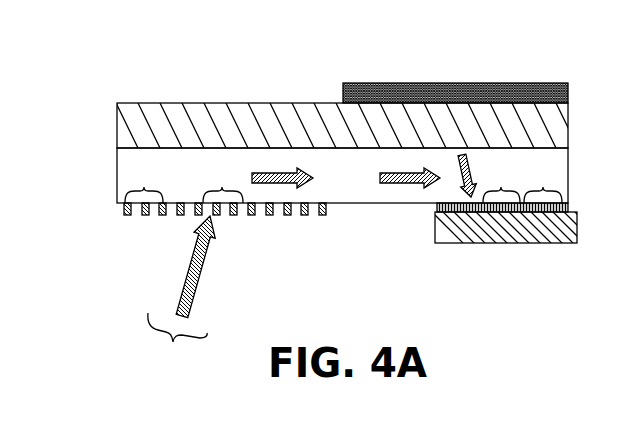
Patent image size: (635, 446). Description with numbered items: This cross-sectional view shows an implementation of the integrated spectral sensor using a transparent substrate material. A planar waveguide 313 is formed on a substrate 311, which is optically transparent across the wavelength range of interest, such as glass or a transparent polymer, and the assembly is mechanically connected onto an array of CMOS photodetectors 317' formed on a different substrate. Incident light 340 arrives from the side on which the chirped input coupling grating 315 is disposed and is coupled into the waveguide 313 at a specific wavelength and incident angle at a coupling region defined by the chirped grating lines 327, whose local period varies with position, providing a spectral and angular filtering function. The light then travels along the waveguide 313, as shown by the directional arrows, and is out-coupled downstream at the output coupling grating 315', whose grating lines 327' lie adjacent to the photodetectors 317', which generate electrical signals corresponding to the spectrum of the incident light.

The substrate 311 is at (112, 128).
The waveguide 313 is at (112, 172).
The chirped input coupling grating 315 is at (120, 260).
The chirped grating lines 327 is at (225, 242).
The output coupling grating 315' is at (399, 243).
The CMOS photodetectors 317' is at (516, 241).
The grating lines 327' is at (534, 232).
The incident light 340 is at (181, 295).